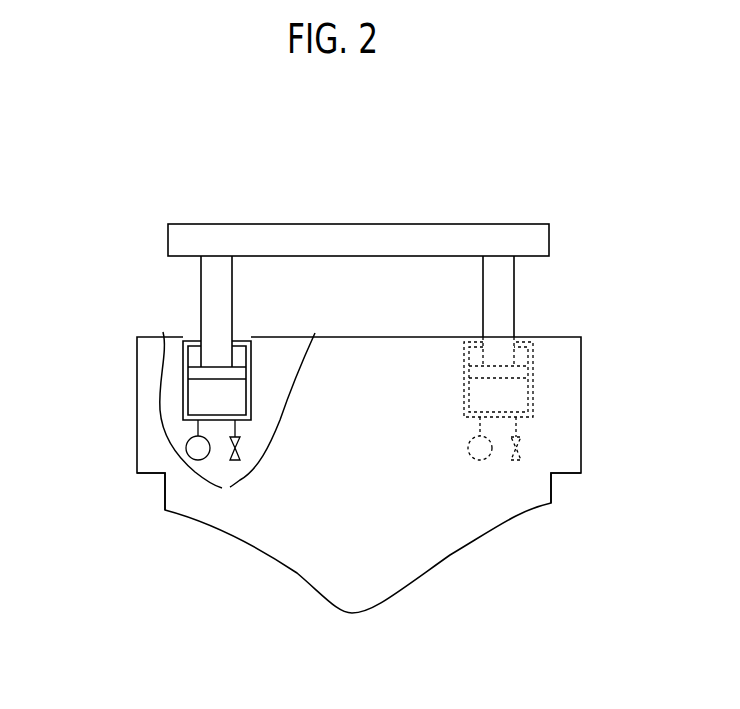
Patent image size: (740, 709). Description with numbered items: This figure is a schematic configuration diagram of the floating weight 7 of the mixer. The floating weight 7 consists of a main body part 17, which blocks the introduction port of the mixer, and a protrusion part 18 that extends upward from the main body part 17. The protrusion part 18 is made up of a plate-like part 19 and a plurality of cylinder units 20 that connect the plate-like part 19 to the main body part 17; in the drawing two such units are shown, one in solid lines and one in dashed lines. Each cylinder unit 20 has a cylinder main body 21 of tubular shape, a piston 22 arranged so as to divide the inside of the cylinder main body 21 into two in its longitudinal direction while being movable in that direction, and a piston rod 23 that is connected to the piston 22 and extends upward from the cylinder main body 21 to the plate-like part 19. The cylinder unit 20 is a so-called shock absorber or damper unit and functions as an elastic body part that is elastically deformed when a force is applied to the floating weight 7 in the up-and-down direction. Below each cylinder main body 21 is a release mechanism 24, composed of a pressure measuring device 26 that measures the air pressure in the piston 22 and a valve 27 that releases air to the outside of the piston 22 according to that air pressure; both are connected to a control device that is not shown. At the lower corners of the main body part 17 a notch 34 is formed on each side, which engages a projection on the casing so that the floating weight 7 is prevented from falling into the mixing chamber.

The floating weight 7 is at (345, 440).
The main body part 17 is at (555, 438).
The protrusion part 18 is at (358, 194).
The plate-like part 19 is at (338, 227).
The cylinder unit 20 is at (345, 363).
The cylinder main body 21 is at (183, 357).
The piston 22 is at (183, 386).
The piston rod 23 is at (209, 295).
The release mechanism 24 is at (145, 504).
The pressure measuring device 26 is at (198, 450).
The valve 27 is at (234, 461).
The notch 34 is at (160, 496).